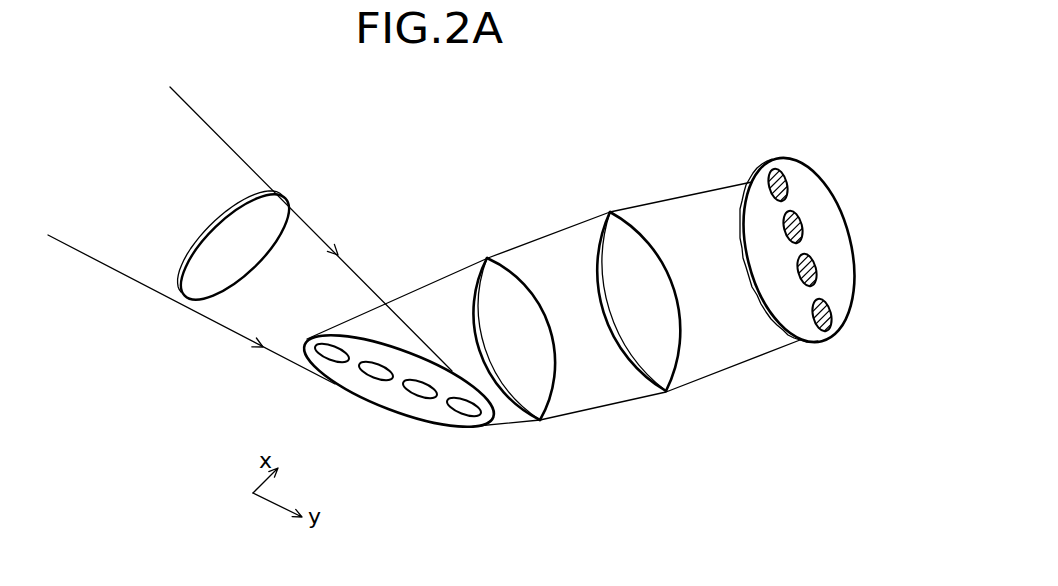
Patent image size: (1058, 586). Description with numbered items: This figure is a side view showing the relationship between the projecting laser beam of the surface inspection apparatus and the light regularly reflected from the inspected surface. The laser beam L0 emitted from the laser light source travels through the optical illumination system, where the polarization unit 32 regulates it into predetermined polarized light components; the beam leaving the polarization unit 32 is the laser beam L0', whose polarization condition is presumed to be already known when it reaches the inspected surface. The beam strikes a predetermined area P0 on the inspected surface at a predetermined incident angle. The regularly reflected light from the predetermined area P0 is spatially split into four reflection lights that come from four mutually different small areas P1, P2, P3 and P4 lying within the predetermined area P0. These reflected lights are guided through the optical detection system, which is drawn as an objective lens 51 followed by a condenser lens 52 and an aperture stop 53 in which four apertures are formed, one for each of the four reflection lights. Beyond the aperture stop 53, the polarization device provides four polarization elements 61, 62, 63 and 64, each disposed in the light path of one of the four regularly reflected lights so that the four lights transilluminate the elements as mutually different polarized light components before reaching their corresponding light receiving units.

The polarization unit 32 is at (198, 307).
The objective lens 51 is at (540, 421).
The condenser lens 52 is at (666, 393).
The aperture stop 53 is at (824, 338).
The polarization element 61 is at (829, 312).
The polarization element 62 is at (815, 260).
The polarization element 63 is at (801, 224).
The polarization element 64 is at (786, 182).
The laser beam L0 is at (190, 309).
The laser beam L0' is at (311, 229).
The predetermined area P0 is at (307, 347).
The small area P1 is at (332, 353).
The small area P2 is at (376, 371).
The small area P3 is at (420, 389).
The small area P4 is at (464, 407).